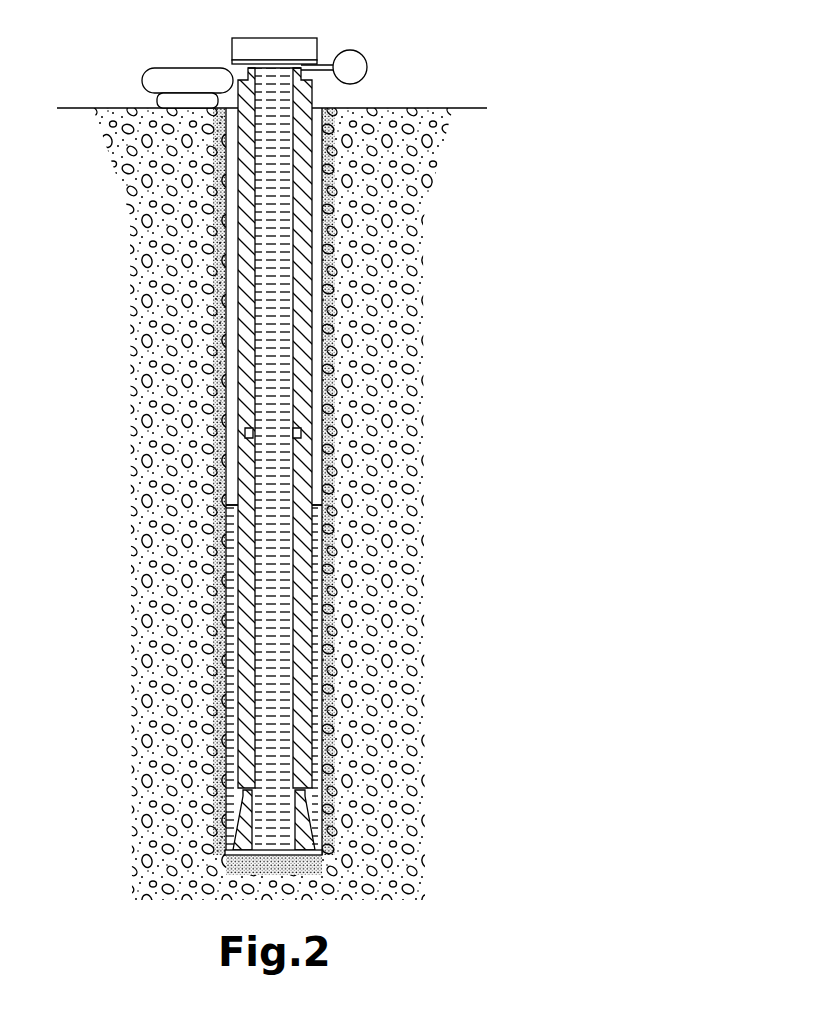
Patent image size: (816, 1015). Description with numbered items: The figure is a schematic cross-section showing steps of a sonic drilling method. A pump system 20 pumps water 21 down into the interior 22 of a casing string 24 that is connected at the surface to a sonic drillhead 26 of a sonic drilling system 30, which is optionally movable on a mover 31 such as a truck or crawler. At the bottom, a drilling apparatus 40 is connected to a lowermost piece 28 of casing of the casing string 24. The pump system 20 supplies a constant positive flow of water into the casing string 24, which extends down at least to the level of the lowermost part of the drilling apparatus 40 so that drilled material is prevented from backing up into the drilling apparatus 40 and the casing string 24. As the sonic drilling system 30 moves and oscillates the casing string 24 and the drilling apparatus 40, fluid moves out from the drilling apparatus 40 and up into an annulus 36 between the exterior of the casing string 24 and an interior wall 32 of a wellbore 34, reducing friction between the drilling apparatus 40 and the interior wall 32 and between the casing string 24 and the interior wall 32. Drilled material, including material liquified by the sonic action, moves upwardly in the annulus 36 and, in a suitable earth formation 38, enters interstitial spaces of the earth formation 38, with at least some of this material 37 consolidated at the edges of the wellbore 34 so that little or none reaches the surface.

The pump system 20 is at (367, 70).
The water 21 is at (270, 113).
The interior of casing string 22 is at (278, 290).
The casing string 24 is at (300, 343).
The sonic drillhead 26 is at (306, 60).
The lowermost piece of casing 28 is at (243, 708).
The sonic drilling system 30 is at (232, 58).
The mover 31 is at (142, 78).
The interior wall 32 is at (228, 461).
The wellbore 34 is at (325, 425).
The annulus 36 is at (320, 485).
The consolidated drilled material 37 is at (333, 637).
The earth formation 38 is at (380, 580).
The drilling apparatus 40 is at (305, 826).